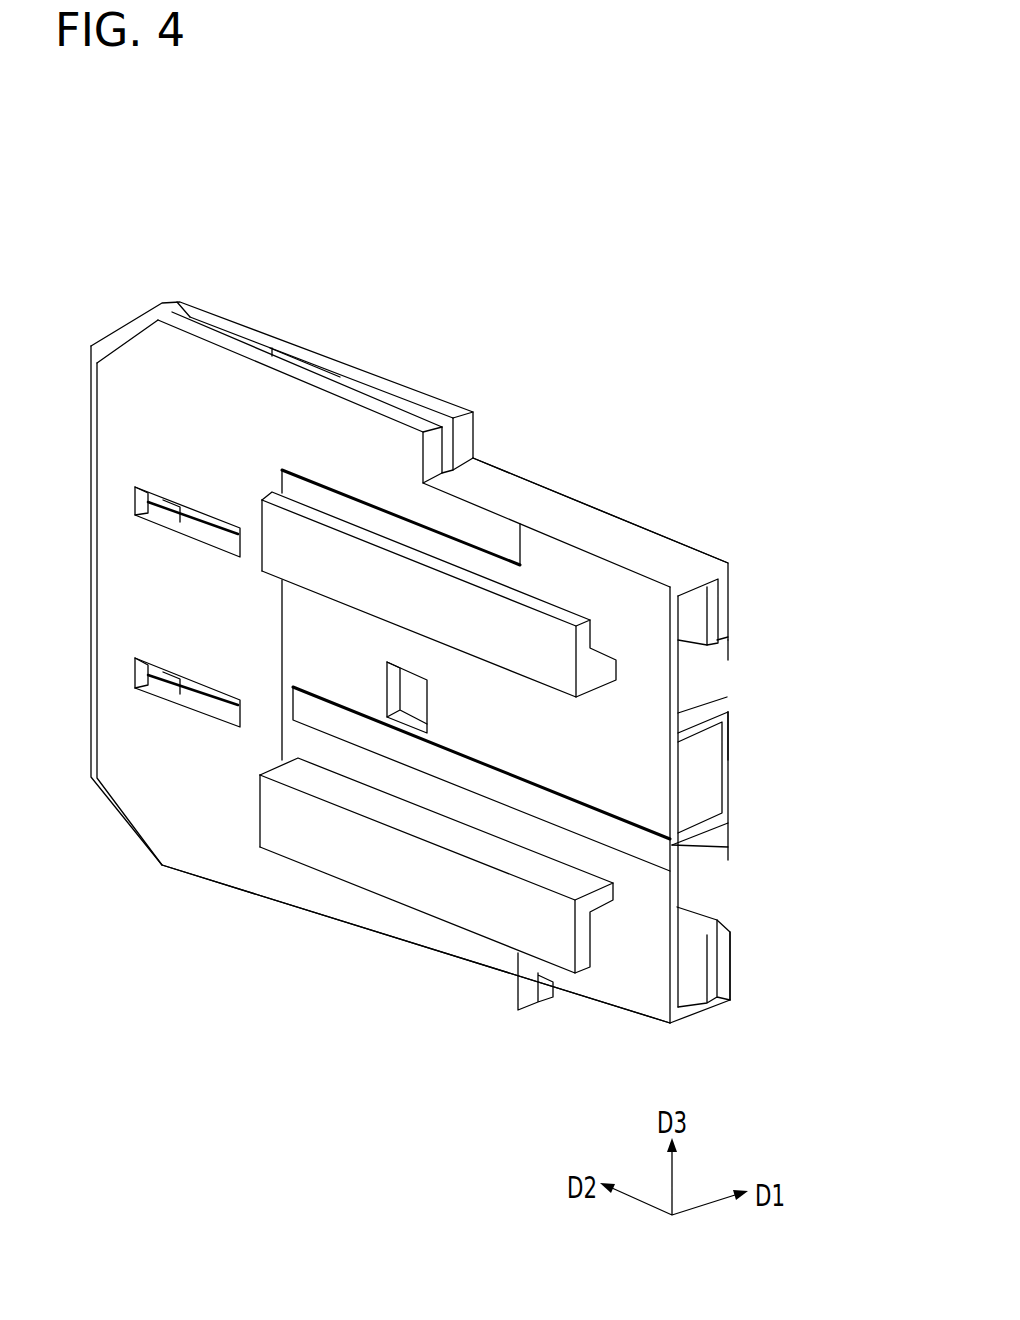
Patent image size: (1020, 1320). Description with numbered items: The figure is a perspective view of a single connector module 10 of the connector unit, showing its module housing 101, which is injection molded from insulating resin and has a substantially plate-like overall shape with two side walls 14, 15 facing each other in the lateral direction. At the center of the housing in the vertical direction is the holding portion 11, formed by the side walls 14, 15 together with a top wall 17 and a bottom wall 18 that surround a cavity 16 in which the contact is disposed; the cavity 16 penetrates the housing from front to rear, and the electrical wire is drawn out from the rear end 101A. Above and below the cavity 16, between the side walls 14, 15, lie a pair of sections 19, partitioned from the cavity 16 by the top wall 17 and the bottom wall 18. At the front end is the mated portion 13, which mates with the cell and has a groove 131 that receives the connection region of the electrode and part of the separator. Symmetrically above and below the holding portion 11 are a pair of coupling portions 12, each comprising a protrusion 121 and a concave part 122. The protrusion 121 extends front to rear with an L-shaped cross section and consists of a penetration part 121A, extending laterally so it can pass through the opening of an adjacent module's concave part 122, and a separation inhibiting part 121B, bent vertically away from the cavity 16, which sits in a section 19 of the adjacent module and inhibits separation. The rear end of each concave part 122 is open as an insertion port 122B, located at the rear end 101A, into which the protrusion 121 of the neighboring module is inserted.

The connector module 10 is at (586, 336).
The holding portion 11 is at (728, 792).
The coupling portion 12 is at (187, 629).
The mated portion 13 is at (247, 322).
The groove 131 is at (210, 328).
The side wall 14 is at (633, 987).
The side wall 15 is at (730, 953).
The cavity 16 is at (702, 794).
The top wall 17 is at (688, 697).
The bottom wall 18 is at (685, 837).
The section 19 is at (698, 601).
The module housing 101 is at (627, 517).
The rear end 101A is at (728, 772).
The protrusion 121 is at (257, 518).
The penetration part 121A is at (597, 680).
The separation inhibiting part 121B is at (540, 605).
The concave part 122 is at (714, 653).
The insertion port 122B is at (703, 700).